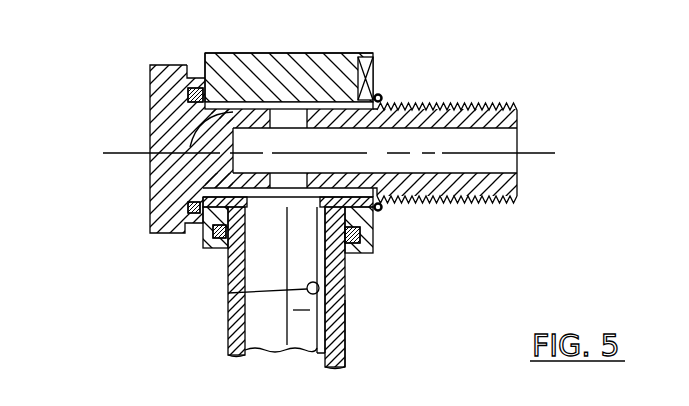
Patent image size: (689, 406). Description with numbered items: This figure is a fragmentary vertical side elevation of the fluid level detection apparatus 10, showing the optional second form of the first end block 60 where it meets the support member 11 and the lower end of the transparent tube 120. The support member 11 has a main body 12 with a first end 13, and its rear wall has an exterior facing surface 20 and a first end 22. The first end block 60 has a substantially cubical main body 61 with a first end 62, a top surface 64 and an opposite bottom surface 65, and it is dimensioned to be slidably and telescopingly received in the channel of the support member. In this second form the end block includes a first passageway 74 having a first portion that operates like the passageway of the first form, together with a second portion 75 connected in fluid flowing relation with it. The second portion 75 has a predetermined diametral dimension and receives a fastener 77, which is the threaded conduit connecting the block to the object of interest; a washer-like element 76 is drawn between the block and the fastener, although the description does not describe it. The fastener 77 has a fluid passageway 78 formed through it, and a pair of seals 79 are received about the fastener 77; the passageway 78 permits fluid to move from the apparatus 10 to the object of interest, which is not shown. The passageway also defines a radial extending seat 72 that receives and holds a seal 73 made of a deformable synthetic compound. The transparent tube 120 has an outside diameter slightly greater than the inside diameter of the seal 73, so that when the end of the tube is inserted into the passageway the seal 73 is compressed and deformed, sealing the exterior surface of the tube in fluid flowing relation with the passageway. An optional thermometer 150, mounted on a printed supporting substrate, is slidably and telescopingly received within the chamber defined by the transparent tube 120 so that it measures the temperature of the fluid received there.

The fluid level detection apparatus 10 is at (295, 194).
The support member 11 is at (300, 298).
The main body 12 is at (345, 337).
The first end 13 is at (340, 267).
The exterior facing surface 20 is at (343, 367).
The first end 22 is at (338, 292).
The first end block 60 is at (256, 51).
The main body 61 is at (333, 63).
The first end 62 is at (302, 53).
The top surface 64 is at (203, 65).
The bottom surface 65 is at (373, 232).
The radial extending seat 72 is at (205, 250).
The seal 73 is at (152, 236).
The first passageway 74 is at (337, 96).
The second portion of the first passageway 75 is at (218, 183).
The washer 76 is at (243, 103).
The fastener 77 is at (150, 130).
The fluid passageway 78 is at (373, 141).
The seals 79 is at (190, 90).
The transparent tube 120 is at (230, 332).
The thermometer 150 is at (228, 293).